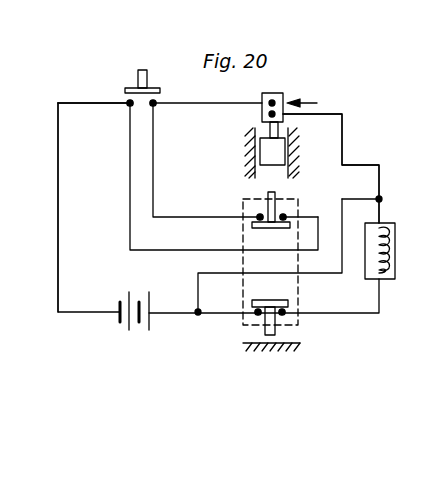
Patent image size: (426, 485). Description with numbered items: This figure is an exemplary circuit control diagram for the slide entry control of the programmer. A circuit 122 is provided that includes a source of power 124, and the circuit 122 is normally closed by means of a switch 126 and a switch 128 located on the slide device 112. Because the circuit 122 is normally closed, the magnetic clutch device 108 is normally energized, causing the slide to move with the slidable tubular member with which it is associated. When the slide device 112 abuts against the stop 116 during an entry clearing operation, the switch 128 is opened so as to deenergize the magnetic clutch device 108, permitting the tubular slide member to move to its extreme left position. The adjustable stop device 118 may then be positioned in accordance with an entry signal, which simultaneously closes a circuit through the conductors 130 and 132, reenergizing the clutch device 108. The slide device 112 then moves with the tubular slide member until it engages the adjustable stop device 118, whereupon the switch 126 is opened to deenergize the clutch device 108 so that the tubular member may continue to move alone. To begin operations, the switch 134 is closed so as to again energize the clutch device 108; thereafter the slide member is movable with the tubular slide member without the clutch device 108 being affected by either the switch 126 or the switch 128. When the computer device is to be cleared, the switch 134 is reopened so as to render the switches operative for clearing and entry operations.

The magnetic clutch device 108 is at (385, 279).
The slide device 112 is at (242, 290).
The stop 116 is at (295, 350).
The adjustable stop device 118 is at (265, 152).
The circuit 122 is at (62, 211).
The source of power 124 is at (116, 297).
The switch 126 is at (254, 225).
The switch 128 is at (276, 300).
The conductor 130 is at (100, 104).
The conductor 132 is at (362, 160).
The switch 134 is at (138, 78).